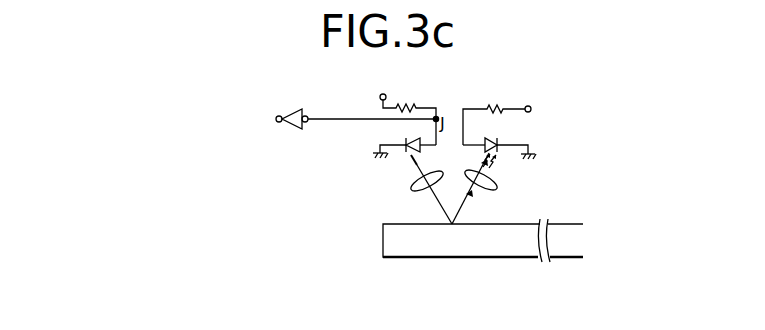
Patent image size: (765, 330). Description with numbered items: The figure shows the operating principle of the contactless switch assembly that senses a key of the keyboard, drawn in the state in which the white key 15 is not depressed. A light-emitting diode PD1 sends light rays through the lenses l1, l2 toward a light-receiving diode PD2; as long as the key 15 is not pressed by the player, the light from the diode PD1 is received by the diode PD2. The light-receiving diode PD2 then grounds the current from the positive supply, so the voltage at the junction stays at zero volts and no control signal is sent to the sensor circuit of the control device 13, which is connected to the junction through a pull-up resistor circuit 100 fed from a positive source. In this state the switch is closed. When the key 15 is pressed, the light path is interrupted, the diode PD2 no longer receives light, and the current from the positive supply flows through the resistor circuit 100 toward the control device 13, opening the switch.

The control device 13 is at (276, 119).
The pull-up resistor circuit 100 is at (443, 93).
The light-emitting diode PD1 is at (512, 134).
The light-receiving diode PD2 is at (413, 153).
The lens l1 is at (480, 189).
The lens l2 is at (430, 195).
The white key 15 is at (462, 247).